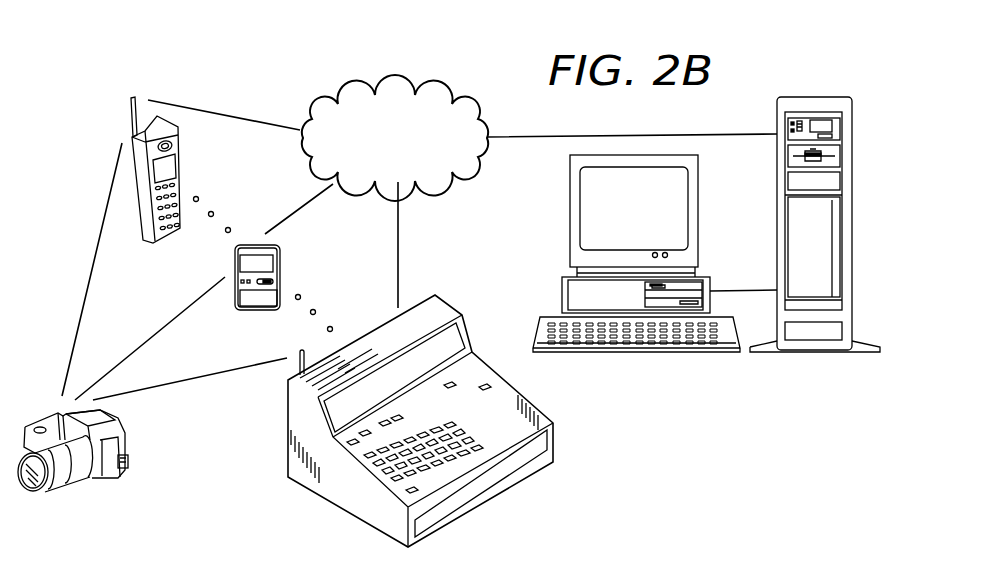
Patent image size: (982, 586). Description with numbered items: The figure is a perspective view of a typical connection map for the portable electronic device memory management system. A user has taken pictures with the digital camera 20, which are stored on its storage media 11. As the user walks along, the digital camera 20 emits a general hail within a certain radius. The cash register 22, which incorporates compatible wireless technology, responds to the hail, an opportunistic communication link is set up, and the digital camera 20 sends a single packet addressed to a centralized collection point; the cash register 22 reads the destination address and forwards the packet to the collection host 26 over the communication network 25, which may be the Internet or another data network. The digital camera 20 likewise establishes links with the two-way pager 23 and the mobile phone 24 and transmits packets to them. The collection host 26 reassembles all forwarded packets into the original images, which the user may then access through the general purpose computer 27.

The storage media 11 is at (129, 463).
The digital camera 20 is at (88, 478).
The cash register 22 is at (340, 512).
The two-way pager 23 is at (253, 245).
The mobile phone 24 is at (148, 246).
The communication network 25 is at (388, 91).
The collection host 26 is at (818, 97).
The general purpose computer 27 is at (700, 223).